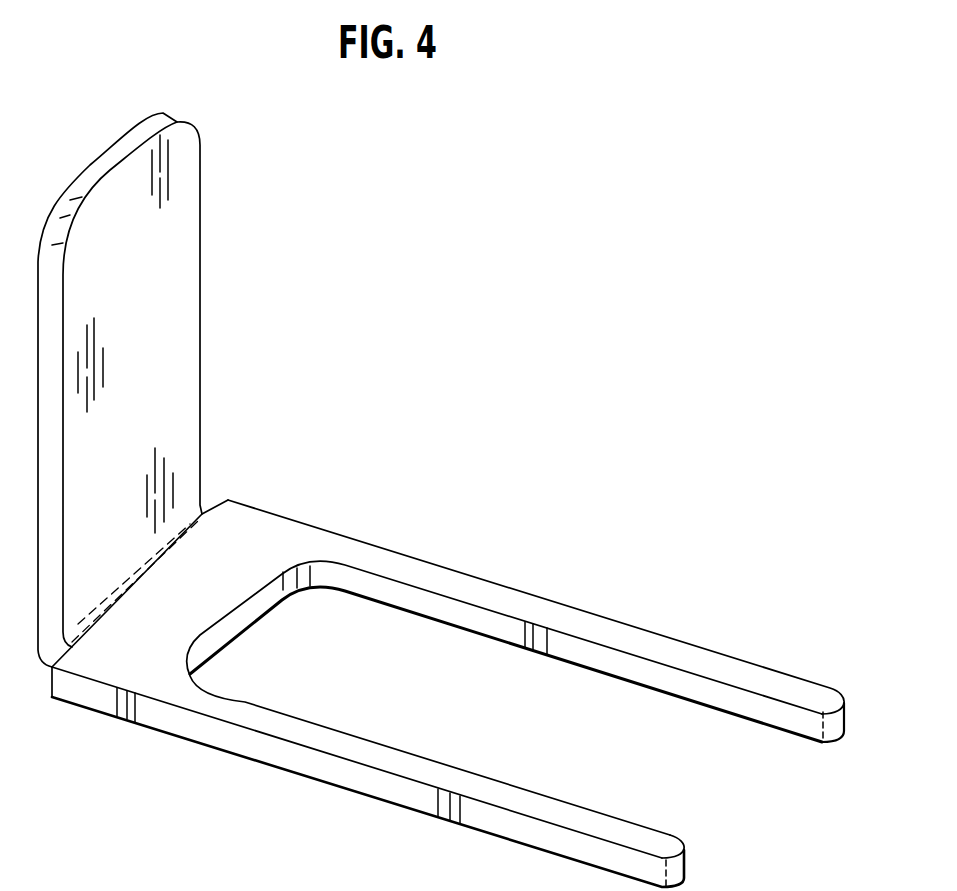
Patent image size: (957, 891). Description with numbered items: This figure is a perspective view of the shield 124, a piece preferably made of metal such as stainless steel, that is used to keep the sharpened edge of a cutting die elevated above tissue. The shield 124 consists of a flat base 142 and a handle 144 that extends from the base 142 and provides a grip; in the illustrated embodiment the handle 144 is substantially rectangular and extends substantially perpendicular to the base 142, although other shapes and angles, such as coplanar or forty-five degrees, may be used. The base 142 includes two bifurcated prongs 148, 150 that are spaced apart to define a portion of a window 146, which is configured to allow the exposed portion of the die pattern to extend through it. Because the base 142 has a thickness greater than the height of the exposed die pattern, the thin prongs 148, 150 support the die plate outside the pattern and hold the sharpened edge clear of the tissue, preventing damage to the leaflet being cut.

The shield 124 is at (443, 410).
The base 142 is at (260, 535).
The handle 144 is at (175, 280).
The window 146 is at (582, 713).
The bifurcated prong 148 is at (472, 587).
The bifurcated prong 150 is at (360, 753).